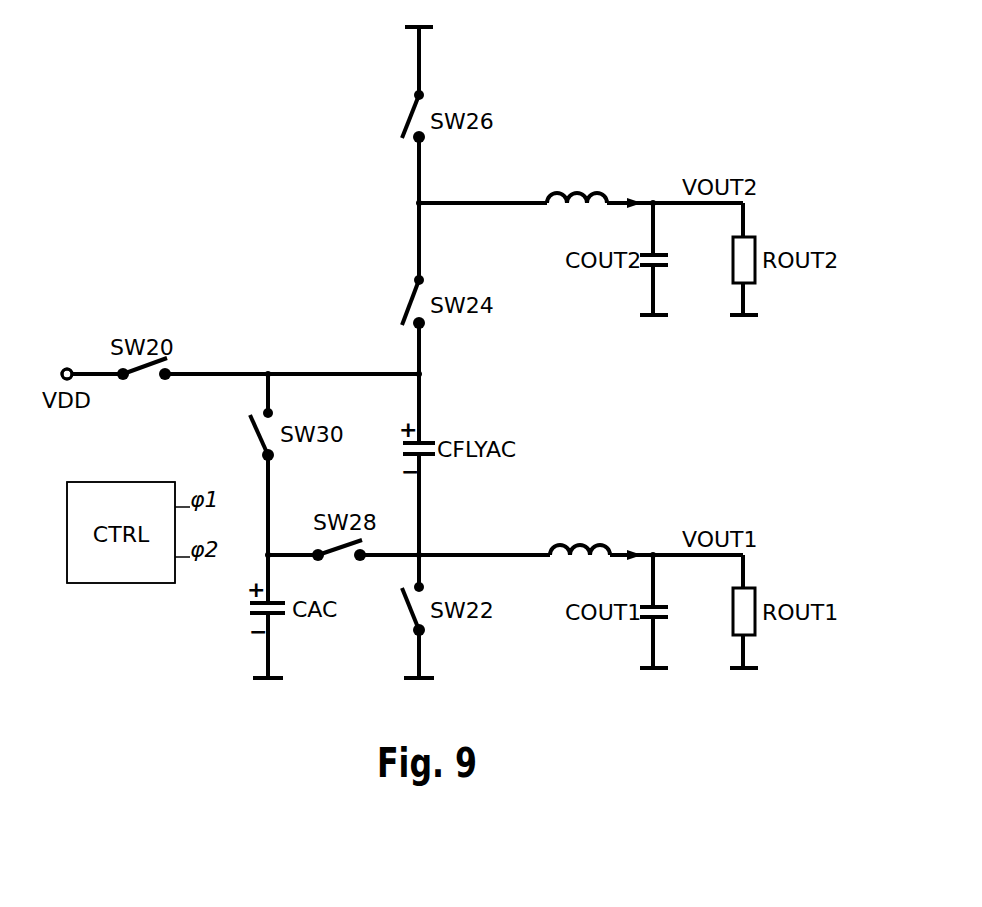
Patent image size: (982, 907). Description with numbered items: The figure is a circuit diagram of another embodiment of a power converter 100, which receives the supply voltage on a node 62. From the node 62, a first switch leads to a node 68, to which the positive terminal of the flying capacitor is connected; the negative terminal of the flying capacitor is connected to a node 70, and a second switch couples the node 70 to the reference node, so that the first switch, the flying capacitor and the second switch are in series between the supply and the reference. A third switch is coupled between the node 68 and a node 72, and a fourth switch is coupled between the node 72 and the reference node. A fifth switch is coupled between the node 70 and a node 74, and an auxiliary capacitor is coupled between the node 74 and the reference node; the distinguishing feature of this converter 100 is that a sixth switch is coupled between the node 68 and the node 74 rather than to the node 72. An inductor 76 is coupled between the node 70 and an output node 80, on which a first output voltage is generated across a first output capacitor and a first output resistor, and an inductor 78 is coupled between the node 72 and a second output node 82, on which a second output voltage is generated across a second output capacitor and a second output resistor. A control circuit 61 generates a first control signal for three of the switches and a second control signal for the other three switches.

The power converter 100 is at (656, 76).
The node 72 is at (421, 203).
The inductor 78 is at (577, 190).
The node 82 is at (653, 200).
The node 68 is at (421, 374).
The node 62 is at (68, 368).
The control circuit 61 is at (118, 482).
The node 74 is at (265, 553).
The node 70 is at (421, 555).
The inductor 76 is at (578, 542).
The node 80 is at (653, 552).